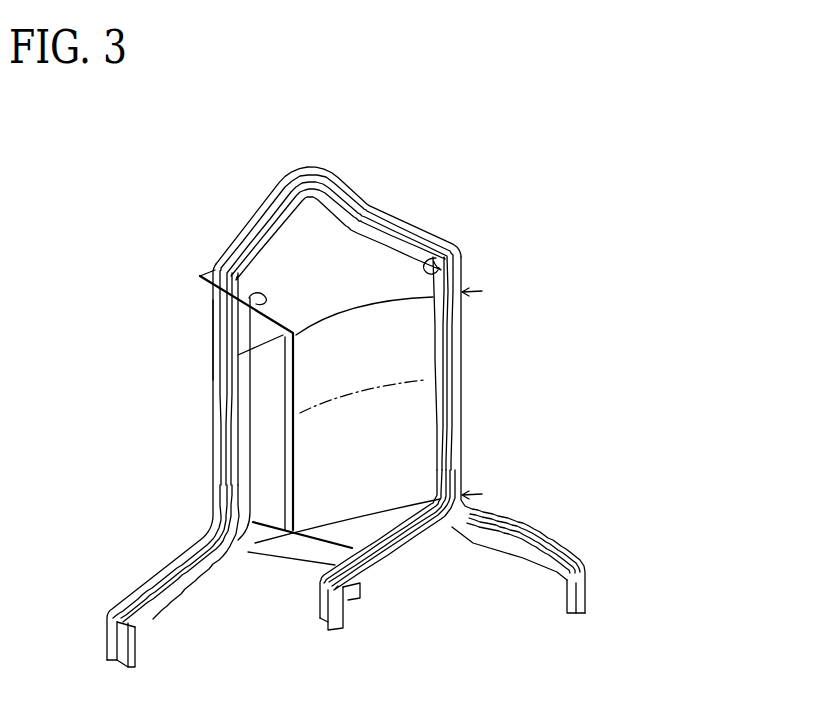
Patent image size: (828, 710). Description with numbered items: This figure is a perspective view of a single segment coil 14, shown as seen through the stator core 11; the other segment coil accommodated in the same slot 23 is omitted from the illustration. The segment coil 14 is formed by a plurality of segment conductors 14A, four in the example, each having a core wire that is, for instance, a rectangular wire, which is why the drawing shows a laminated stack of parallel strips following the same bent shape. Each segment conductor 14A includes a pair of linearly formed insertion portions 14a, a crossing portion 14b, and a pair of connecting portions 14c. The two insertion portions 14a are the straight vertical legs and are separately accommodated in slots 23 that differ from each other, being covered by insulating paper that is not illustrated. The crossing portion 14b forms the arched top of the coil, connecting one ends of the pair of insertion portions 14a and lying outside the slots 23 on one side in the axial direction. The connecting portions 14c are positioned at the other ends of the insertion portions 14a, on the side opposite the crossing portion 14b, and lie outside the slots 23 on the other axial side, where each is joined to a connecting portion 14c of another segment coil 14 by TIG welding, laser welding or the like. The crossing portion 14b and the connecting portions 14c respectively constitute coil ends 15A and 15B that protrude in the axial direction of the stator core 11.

The stator core 11 is at (199, 298).
The segment coil 14 is at (252, 188).
The insertion portion 14a is at (235, 455).
The segment conductor 14A is at (218, 368).
The crossing portion 14b is at (325, 182).
The connecting portion 14c is at (358, 548).
The coil end 15A is at (338, 177).
The coil end 15B is at (418, 562).
The slot 23 is at (247, 296).